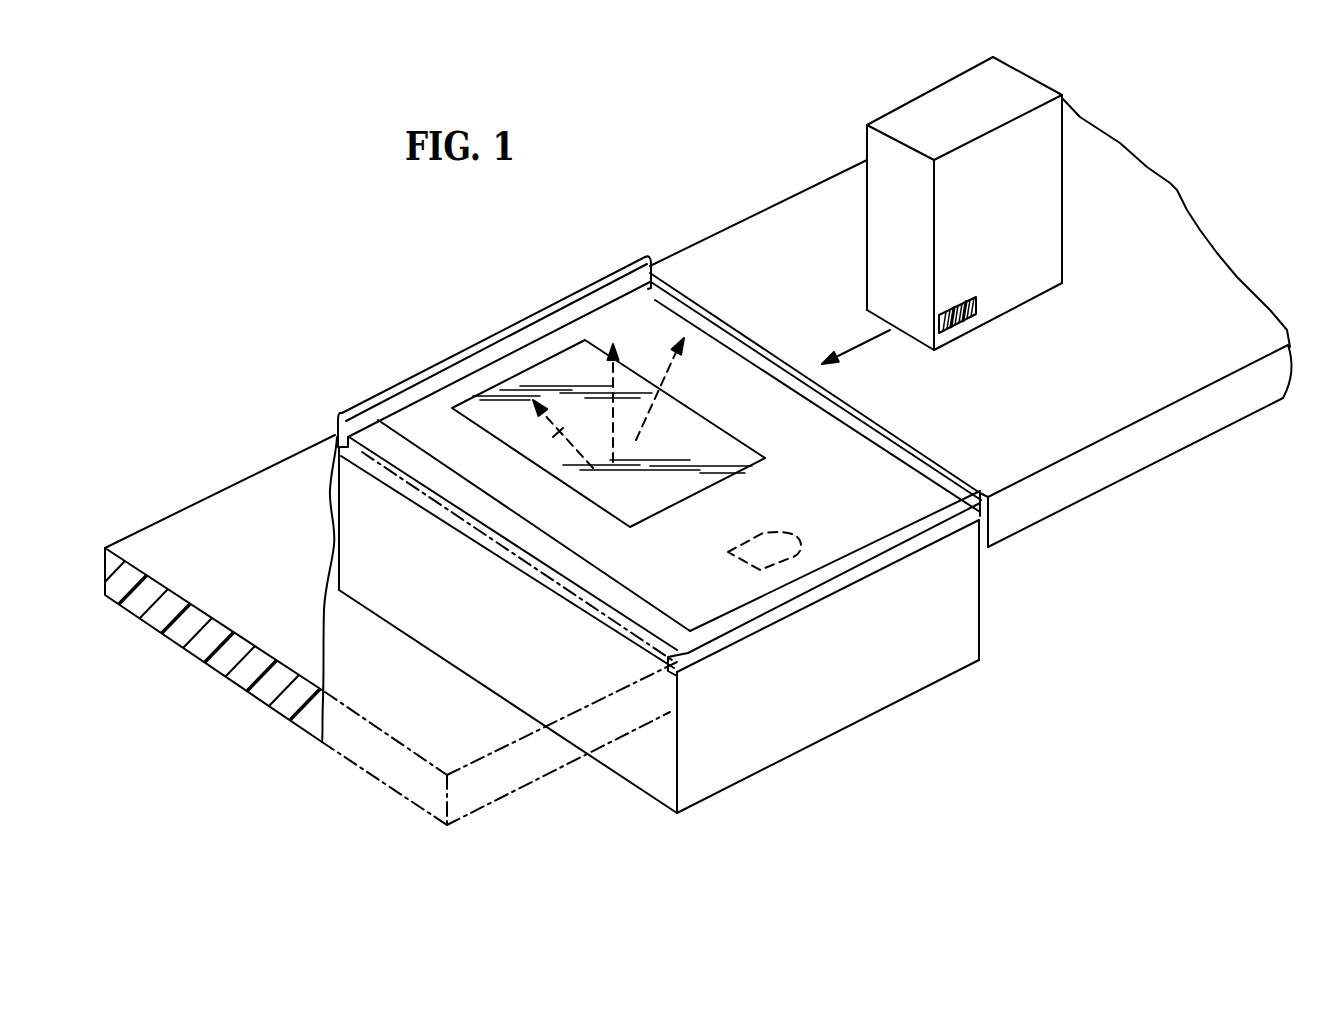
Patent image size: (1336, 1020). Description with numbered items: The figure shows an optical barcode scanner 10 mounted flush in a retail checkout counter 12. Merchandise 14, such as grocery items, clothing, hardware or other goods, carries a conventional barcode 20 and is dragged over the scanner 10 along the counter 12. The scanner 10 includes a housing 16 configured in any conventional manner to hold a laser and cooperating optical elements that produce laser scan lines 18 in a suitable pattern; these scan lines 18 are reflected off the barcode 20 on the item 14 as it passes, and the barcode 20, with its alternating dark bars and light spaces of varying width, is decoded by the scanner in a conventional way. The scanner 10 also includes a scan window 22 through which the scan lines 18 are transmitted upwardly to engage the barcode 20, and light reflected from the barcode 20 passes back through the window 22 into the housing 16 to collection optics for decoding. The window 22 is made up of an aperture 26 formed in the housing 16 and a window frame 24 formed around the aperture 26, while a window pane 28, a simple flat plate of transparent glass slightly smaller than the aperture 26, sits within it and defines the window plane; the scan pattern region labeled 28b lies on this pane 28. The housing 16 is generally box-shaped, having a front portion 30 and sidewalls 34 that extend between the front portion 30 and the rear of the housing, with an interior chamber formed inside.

The optical barcode scanner 10 is at (269, 239).
The checkout counter 12 is at (788, 222).
The merchandise 14 is at (1052, 246).
The housing 16 is at (833, 718).
The laser scan lines 18 is at (546, 461).
The barcode 20 is at (977, 302).
The scan window 22 is at (430, 360).
The window frame 24 is at (886, 479).
The aperture 26 is at (757, 453).
The window pane 28 is at (681, 429).
The scan window 28b is at (650, 505).
The front portion 30 is at (612, 318).
The sidewalls 34 is at (963, 628).